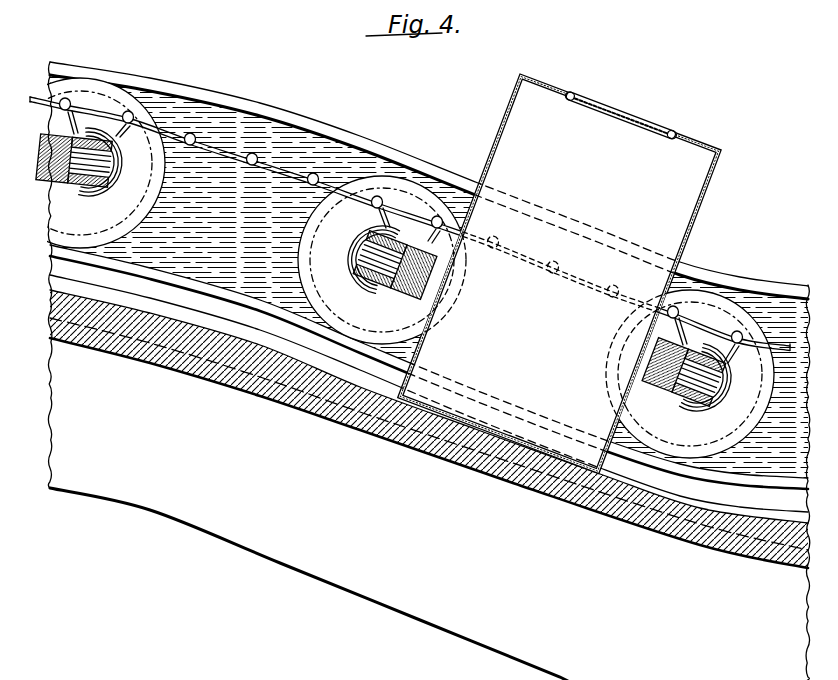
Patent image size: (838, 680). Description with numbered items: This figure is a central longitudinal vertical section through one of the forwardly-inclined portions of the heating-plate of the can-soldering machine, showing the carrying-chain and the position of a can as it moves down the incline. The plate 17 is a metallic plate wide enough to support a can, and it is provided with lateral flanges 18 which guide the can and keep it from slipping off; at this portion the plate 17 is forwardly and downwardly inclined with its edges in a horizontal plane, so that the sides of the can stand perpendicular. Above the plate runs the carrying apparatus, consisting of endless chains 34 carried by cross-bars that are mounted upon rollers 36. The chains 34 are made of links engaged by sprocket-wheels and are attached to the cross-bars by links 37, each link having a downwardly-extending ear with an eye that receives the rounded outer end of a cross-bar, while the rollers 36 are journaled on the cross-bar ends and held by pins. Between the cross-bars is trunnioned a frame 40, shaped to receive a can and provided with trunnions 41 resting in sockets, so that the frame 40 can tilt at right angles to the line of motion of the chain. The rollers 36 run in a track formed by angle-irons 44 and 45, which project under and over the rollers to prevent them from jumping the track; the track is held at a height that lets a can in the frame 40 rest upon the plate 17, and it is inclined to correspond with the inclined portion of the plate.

The plate 17 is at (260, 371).
The lateral flanges 18 is at (268, 354).
The endless chains 34 is at (324, 158).
The rollers 36 is at (387, 268).
The links 37 is at (110, 141).
The frame 40 is at (60, 187).
The trunnions 41 is at (112, 167).
The angle-iron 44 is at (211, 283).
The angle-iron 45 is at (260, 124).